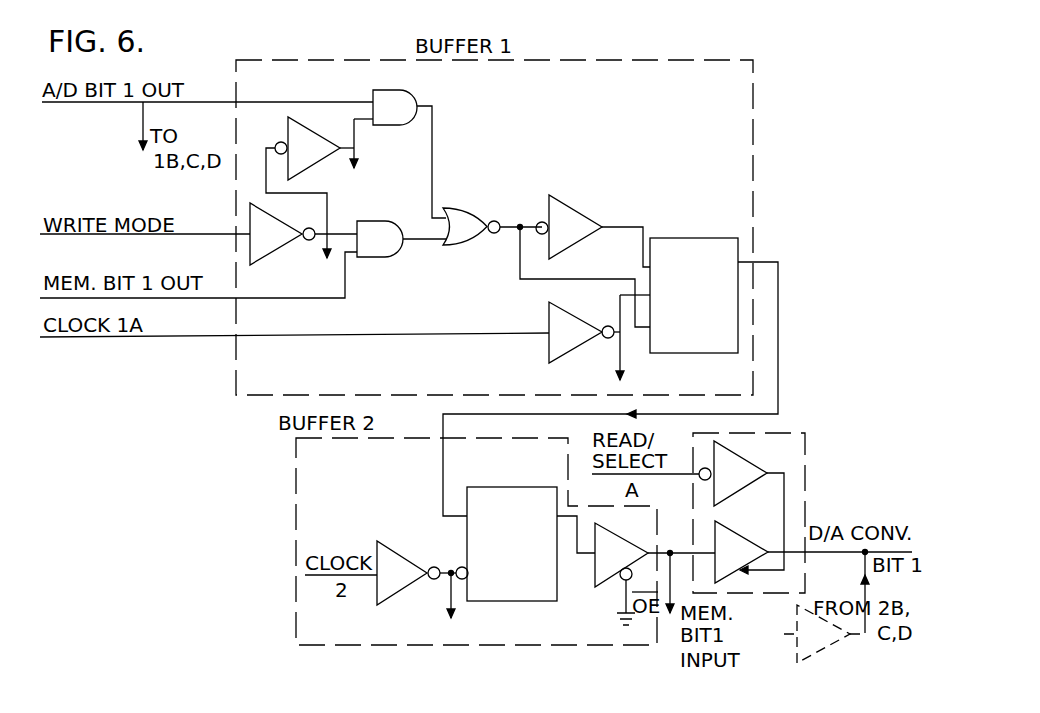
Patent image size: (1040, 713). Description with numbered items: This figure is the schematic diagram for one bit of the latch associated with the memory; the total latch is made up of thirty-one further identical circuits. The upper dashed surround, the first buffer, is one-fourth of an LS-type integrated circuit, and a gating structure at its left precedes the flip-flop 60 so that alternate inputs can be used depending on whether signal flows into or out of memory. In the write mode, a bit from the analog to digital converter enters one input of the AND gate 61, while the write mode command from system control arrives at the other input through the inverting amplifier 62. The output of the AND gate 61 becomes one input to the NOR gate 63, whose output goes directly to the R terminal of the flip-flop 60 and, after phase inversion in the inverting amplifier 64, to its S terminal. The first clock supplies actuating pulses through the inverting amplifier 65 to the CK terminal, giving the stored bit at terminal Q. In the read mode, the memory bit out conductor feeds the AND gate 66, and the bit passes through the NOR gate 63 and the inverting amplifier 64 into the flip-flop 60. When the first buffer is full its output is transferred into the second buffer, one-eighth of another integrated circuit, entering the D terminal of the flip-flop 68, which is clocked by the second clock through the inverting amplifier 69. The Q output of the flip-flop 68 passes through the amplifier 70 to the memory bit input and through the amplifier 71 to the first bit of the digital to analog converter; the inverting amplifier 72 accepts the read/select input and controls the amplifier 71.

The flip-flop 60 is at (678, 240).
The AND gate 61 is at (415, 92).
The inverting amplifier 62 is at (288, 118).
The NOR gate 63 is at (466, 216).
The inverting amplifier 64 is at (580, 214).
The inverting amplifier 65 is at (580, 320).
The AND gate 66 is at (390, 256).
The flip-flop 68 is at (512, 488).
The inverting amplifier 69 is at (391, 551).
The amplifier 70 is at (620, 539).
The amplifier 71 is at (740, 536).
The inverting amplifier 72 is at (752, 465).